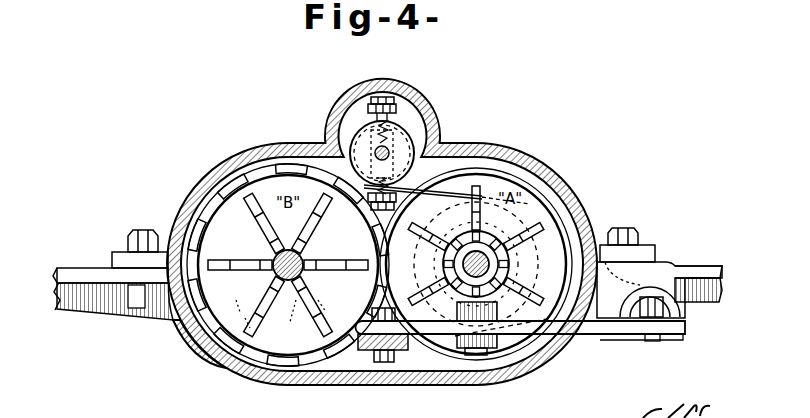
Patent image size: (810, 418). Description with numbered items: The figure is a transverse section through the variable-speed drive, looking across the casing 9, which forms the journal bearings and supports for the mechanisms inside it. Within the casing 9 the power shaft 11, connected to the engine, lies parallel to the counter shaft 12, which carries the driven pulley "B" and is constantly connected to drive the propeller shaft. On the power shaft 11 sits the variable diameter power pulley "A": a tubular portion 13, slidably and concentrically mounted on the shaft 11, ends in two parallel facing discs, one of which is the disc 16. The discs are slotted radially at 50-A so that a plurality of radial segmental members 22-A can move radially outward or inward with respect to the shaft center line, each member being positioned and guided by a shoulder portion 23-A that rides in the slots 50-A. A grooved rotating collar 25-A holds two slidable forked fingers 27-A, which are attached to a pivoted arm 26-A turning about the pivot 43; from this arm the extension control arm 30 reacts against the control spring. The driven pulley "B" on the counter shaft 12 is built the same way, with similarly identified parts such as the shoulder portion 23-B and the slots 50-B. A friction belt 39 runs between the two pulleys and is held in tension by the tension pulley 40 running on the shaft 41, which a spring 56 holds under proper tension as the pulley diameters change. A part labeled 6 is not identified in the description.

The axle 6 is at (700, 276).
The casing 9 is at (506, 366).
The power shaft 11 is at (500, 262).
The counter shaft 12 is at (282, 258).
The tubular portion 13 is at (306, 271).
The disc 16 is at (286, 183).
The radial segmental members 22-A is at (240, 183).
The shoulder portion 23-A is at (479, 219).
The shoulder portion 23-B is at (250, 203).
The grooved rotating collar 25-A is at (506, 254).
The pivoted arm 26-A is at (442, 326).
The forked fingers 27-A is at (508, 325).
The extension control arm 30 is at (584, 334).
The friction belt 39 is at (421, 186).
The tension pulley 40 is at (394, 140).
The shaft 41 is at (396, 142).
The pivot 43 is at (393, 345).
The slots 50-A is at (464, 262).
The slots 50-B is at (303, 254).
The spring 56 is at (370, 108).